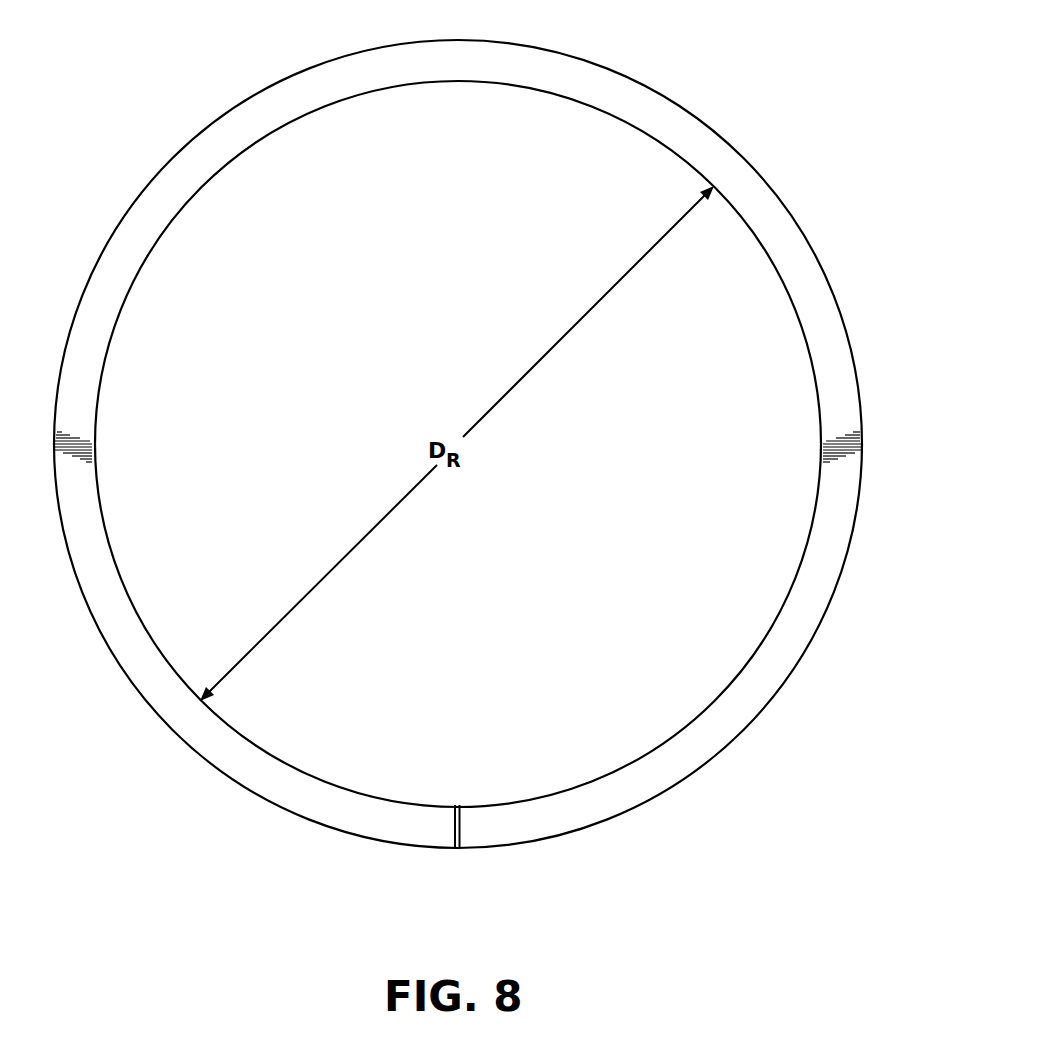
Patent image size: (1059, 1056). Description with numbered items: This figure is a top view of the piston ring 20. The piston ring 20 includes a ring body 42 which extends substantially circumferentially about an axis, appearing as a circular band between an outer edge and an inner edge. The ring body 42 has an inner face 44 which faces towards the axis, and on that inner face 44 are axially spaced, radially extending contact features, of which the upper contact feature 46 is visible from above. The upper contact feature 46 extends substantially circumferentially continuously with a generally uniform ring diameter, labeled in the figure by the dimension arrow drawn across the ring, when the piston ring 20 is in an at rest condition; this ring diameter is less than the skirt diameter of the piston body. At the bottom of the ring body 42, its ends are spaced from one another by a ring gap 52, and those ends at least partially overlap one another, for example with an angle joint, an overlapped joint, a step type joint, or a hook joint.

The piston ring 20 is at (655, 69).
The ring body 42 is at (273, 778).
The inner face 44 is at (340, 98).
The upper contact feature 46 is at (525, 87).
The ring gap 52 is at (456, 850).